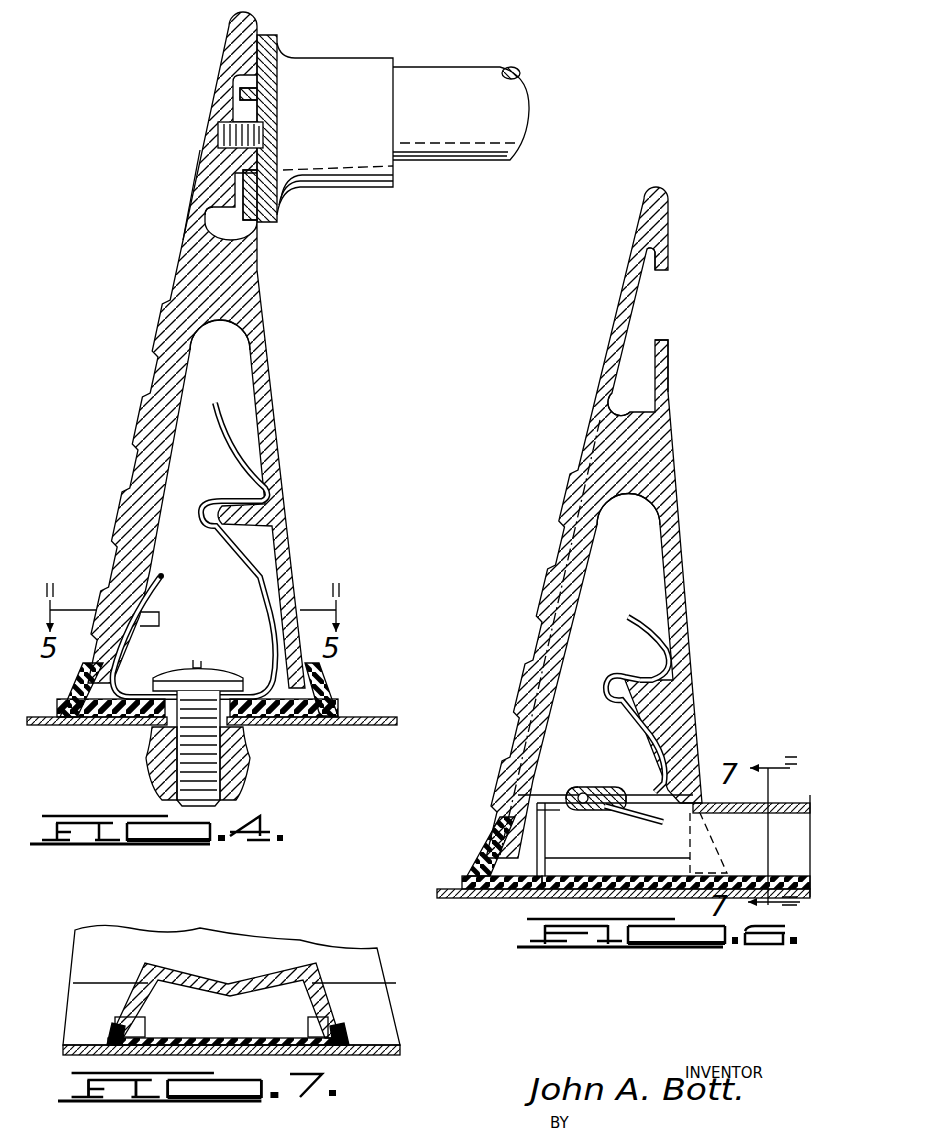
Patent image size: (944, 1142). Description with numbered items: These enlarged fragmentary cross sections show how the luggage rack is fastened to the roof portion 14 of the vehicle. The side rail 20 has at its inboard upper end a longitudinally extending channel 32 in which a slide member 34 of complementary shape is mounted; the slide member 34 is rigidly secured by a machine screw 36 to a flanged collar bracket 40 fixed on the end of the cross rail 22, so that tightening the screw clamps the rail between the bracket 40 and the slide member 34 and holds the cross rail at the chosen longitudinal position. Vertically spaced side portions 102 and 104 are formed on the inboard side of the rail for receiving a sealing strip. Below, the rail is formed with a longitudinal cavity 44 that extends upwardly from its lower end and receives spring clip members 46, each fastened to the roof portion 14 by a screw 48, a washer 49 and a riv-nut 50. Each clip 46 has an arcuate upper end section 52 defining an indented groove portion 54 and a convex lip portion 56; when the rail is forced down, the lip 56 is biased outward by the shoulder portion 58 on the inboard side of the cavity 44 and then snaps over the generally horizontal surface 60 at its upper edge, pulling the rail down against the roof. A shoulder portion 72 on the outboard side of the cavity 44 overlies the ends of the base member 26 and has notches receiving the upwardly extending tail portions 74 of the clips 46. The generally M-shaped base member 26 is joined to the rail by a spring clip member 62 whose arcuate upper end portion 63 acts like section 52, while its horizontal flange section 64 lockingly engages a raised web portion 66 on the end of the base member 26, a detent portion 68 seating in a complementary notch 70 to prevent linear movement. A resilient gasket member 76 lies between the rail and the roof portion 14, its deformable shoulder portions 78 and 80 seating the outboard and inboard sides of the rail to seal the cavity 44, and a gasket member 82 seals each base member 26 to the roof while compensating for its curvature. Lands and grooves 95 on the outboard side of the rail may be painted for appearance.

In FIG. 4, the roof portion 14 is at (358, 722).
In FIG. 6, the roof portion 14 is at (460, 890).
In FIG. 7, the roof portion 14 is at (383, 1053).
In FIG. 4, the side rail 20 is at (192, 350).
In FIG. 6, the side rail 20 is at (617, 522).
In FIG. 7, the side rail 20 is at (298, 935).
In FIG. 4, the cross rail 22 is at (456, 66).
In FIG. 6, the base member 26 is at (665, 821).
In FIG. 7, the base member 26 is at (244, 1001).
In FIG. 4, the channel 32 is at (207, 219).
In FIG. 6, the channel 32 is at (616, 404).
In FIG. 4, the slide member 34 is at (205, 180).
In FIG. 4, the machine screw 36 is at (289, 119).
In FIG. 4, the flanged collar bracket 40 is at (346, 58).
In FIG. 4, the cavity 44 is at (178, 470).
In FIG. 6, the cavity 44 is at (648, 561).
In FIG. 4, the spring clip member 46 is at (228, 550).
In FIG. 4, the screw 48 is at (217, 657).
In FIG. 4, the washer 49 is at (194, 550).
In FIG. 4, the riv-nut 50 is at (150, 768).
In FIG. 4, the upper end section 52 is at (228, 550).
In FIG. 4, the indented groove portion 54 is at (194, 550).
In FIG. 4, the convex lip portion 56 is at (228, 550).
In FIG. 4, the shoulder portion 58 is at (194, 550).
In FIG. 6, the shoulder portion 58 is at (626, 694).
In FIG. 4, the horizontal surface 60 is at (227, 550).
In FIG. 6, the spring clip member 62 is at (662, 697).
In FIG. 6, the arcuate upper end portion 63 is at (670, 645).
In FIG. 6, the flange section 64 is at (606, 805).
In FIG. 6, the raised web portion 66 is at (673, 806).
In FIG. 6, the detent portion 68 is at (616, 788).
In FIG. 6, the notch 70 is at (589, 789).
In FIG. 4, the shoulder portion 72 is at (161, 614).
In FIG. 6, the shoulder portion 72 is at (542, 808).
In FIG. 4, the tail portion 74 is at (226, 539).
In FIG. 4, the gasket member 76 is at (343, 700).
In FIG. 6, the gasket member 76 is at (462, 873).
In FIG. 7, the gasket member 76 is at (93, 990).
In FIG. 4, the shoulder portion 78 is at (102, 719).
In FIG. 6, the shoulder portion 78 is at (517, 890).
In FIG. 4, the shoulder portion 80 is at (293, 719).
In FIG. 6, the shoulder portion 80 is at (683, 891).
In FIG. 6, the gasket member 82 is at (780, 873).
In FIG. 7, the gasket member 82 is at (341, 1031).
In FIG. 6, the grooves 95 is at (580, 462).
In FIG. 4, the side portion 102 is at (252, 88).
In FIG. 6, the side portion 102 is at (664, 263).
In FIG. 4, the side portion 104 is at (252, 190).
In FIG. 6, the side portion 104 is at (668, 348).